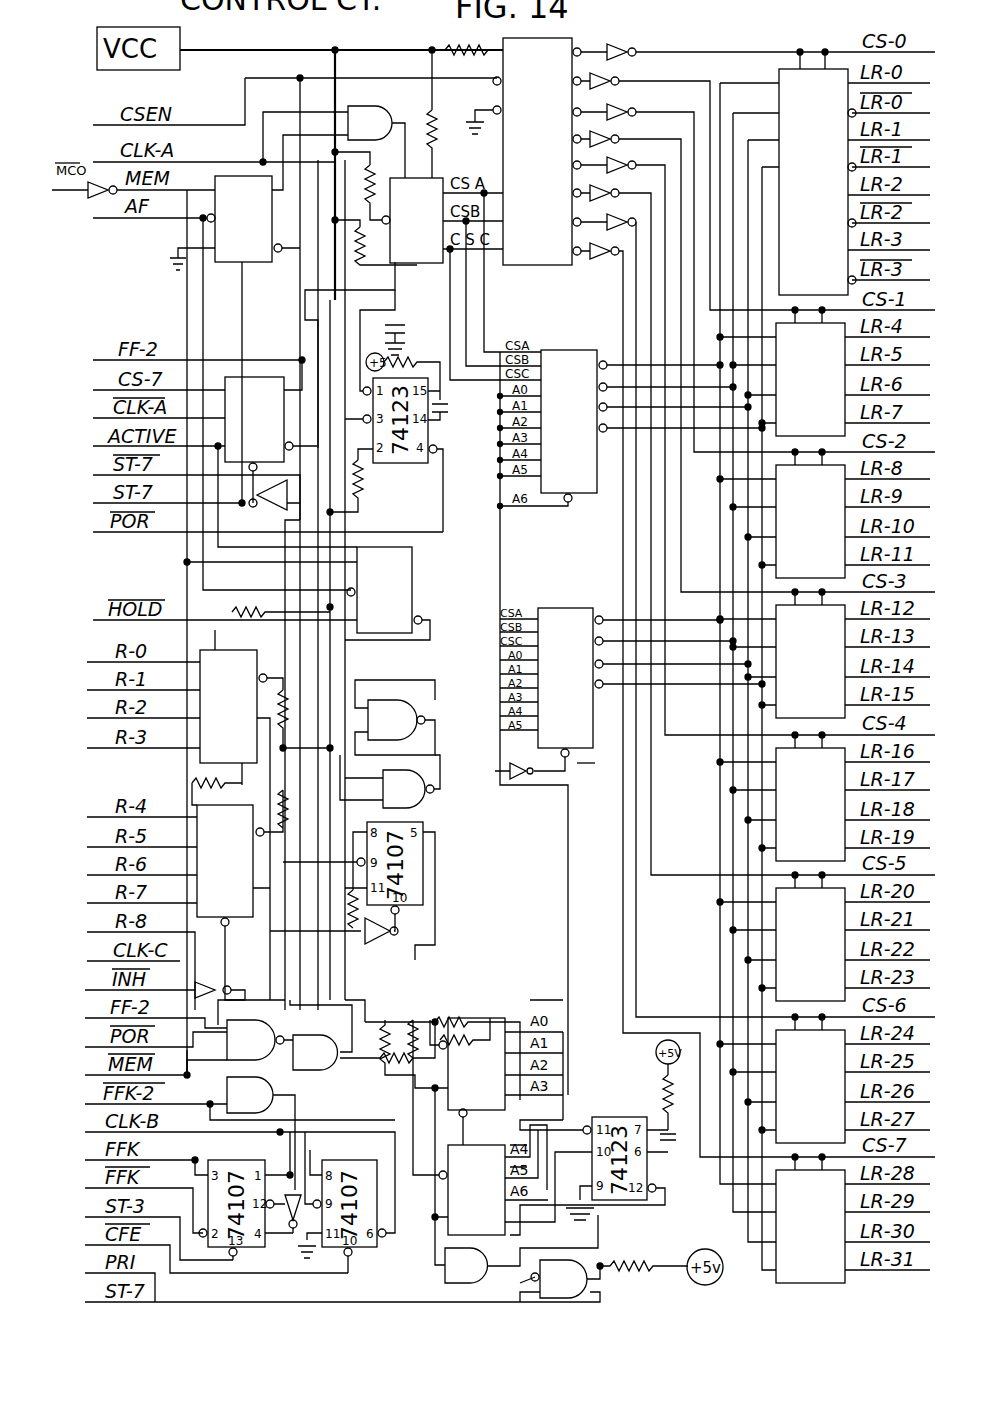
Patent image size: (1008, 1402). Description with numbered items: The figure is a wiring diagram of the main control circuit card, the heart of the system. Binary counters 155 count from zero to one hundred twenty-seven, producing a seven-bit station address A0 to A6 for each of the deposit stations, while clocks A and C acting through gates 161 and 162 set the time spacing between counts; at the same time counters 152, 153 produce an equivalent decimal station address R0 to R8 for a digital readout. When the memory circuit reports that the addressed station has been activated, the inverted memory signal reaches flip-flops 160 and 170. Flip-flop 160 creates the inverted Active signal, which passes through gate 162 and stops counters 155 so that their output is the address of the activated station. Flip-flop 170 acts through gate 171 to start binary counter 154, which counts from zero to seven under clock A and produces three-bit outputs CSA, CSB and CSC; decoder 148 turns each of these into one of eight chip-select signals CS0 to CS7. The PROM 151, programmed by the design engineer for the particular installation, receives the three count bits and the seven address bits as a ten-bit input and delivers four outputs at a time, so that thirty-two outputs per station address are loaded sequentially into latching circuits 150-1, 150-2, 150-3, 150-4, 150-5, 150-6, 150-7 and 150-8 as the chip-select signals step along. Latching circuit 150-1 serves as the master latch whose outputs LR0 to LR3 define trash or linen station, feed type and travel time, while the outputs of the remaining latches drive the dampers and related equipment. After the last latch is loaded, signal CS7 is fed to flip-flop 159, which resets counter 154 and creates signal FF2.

The decoder 148 is at (548, 46).
The latching circuit 150-1 is at (812, 72).
The latching circuit 150-2 is at (790, 442).
The latching circuit 150-3 is at (790, 512).
The latching circuit 150-4 is at (790, 607).
The latching circuit 150-5 is at (790, 752).
The latching circuit 150-6 is at (788, 936).
The latching circuit 150-7 is at (790, 1032).
The latching circuit 150-8 is at (788, 1283).
The PROM 151 is at (562, 360).
The counter 152 is at (205, 752).
The counter 153 is at (180, 795).
The binary counter 154 is at (437, 185).
The binary counters 155 is at (490, 1018).
The flip-flop 159 is at (262, 380).
The flip-flop 160 is at (415, 580).
The gate 161 is at (390, 781).
The gate 162 is at (395, 717).
The flip-flop 170 is at (215, 260).
The gate 171 is at (376, 142).